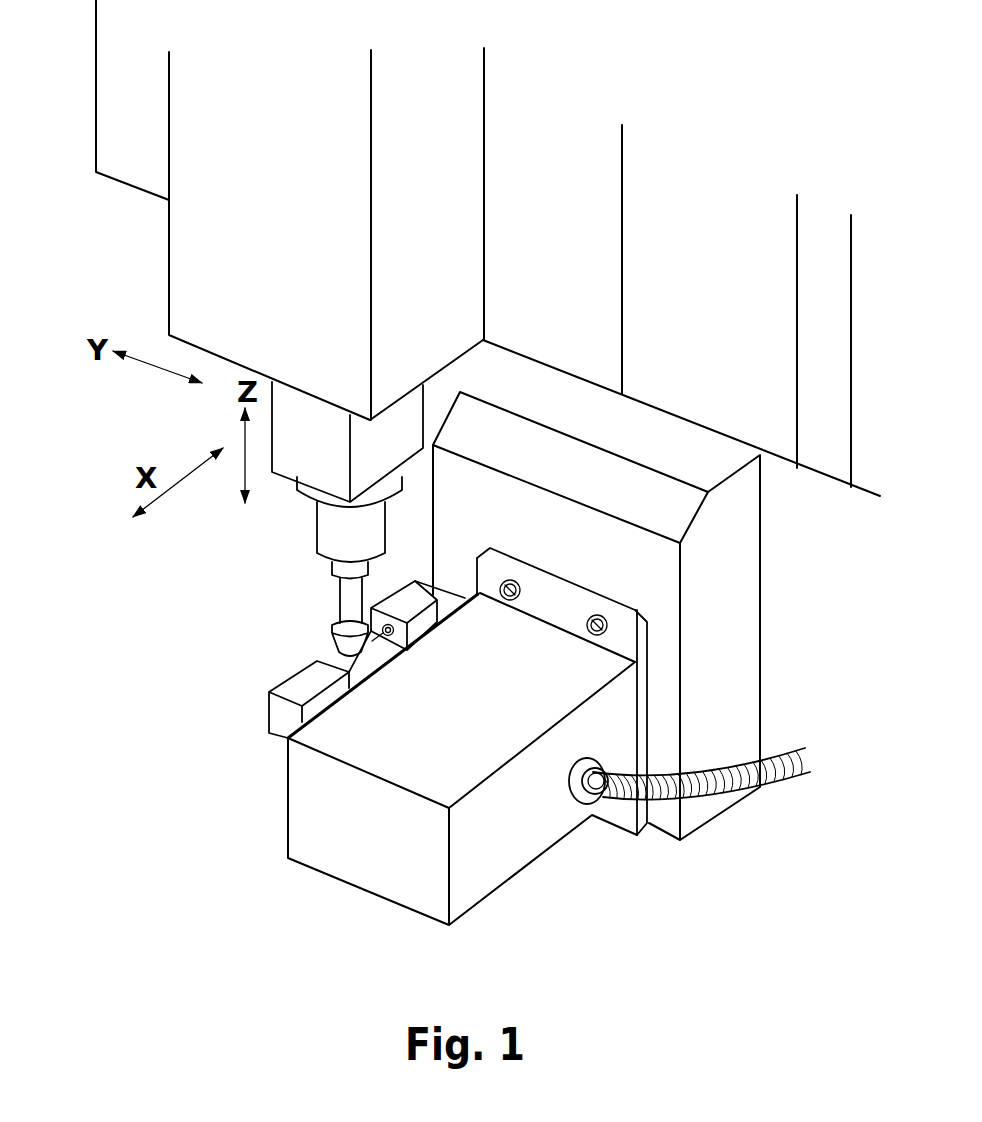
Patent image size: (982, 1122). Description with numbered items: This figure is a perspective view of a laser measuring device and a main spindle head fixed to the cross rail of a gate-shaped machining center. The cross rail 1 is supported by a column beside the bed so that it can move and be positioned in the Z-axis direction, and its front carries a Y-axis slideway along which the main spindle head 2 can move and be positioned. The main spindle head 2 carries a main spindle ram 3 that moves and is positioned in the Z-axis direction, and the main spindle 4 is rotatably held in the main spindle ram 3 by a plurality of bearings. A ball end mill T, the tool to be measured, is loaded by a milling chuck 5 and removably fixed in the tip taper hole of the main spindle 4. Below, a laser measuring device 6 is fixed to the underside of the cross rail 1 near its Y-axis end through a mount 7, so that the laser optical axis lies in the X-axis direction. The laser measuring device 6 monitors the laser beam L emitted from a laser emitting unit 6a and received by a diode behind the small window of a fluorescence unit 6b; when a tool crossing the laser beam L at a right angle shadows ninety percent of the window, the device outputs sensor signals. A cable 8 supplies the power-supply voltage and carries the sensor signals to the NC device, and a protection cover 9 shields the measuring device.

The cross rail 1 is at (780, 430).
The main spindle head 2 is at (193, 234).
The main spindle ram 3 is at (303, 453).
The main spindle 4 is at (315, 493).
The milling chuck 5 is at (348, 605).
The ball end mill T is at (337, 607).
The laser measuring device 6 is at (315, 651).
The laser emitting unit 6a is at (305, 682).
The fluorescence unit 6b is at (390, 603).
The laser beam L is at (343, 660).
The mount 7 is at (722, 597).
The cable 8 is at (730, 792).
The protection cover 9 is at (542, 835).